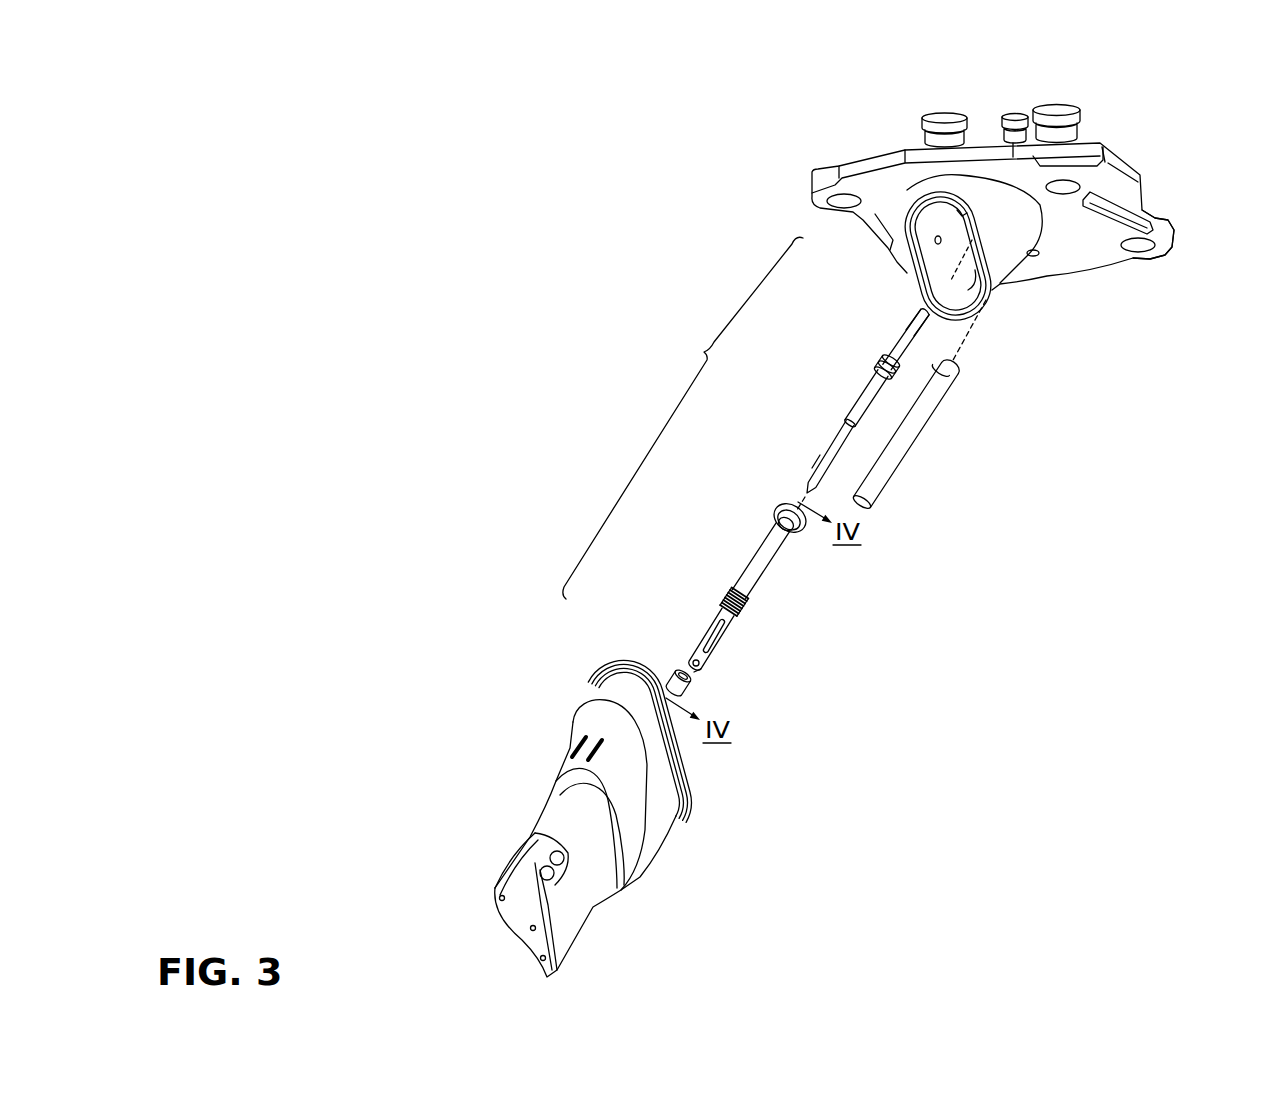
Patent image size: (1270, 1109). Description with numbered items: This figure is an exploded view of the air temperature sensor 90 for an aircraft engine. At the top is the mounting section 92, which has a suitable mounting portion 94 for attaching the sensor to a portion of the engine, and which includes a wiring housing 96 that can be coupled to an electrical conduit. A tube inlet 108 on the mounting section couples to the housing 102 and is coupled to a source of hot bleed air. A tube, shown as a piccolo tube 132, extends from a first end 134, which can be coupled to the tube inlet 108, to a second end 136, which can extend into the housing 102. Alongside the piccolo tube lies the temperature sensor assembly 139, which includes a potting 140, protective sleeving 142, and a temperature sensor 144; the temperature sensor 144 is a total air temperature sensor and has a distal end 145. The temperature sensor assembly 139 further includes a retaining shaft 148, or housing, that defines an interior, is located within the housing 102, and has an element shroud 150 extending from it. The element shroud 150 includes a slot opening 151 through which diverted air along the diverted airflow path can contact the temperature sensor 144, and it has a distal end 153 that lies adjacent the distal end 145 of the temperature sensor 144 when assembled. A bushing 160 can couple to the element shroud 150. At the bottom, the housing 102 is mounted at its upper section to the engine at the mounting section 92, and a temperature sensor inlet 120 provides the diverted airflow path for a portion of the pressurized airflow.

The air temperature sensor 90 is at (886, 607).
The mounting section 92 is at (1099, 283).
The mounting portion 94 is at (1176, 229).
The wiring housing 96 is at (994, 292).
The housing 102 is at (690, 797).
The tube inlet 108 is at (1010, 116).
The temperature sensor inlet 120 is at (536, 905).
The piccolo tube 132 is at (908, 432).
The first end 134 is at (951, 364).
The second end 136 is at (866, 511).
The temperature sensor assembly 139 is at (683, 418).
The potting 140 is at (869, 392).
The protective sleeving 142 is at (914, 332).
The temperature sensor 144 is at (843, 447).
The distal end 145 is at (806, 474).
The retaining shaft 148 is at (773, 569).
The element shroud 150 is at (700, 640).
The slot opening 151 is at (727, 627).
The distal end 153 is at (716, 672).
The bushing 160 is at (677, 675).